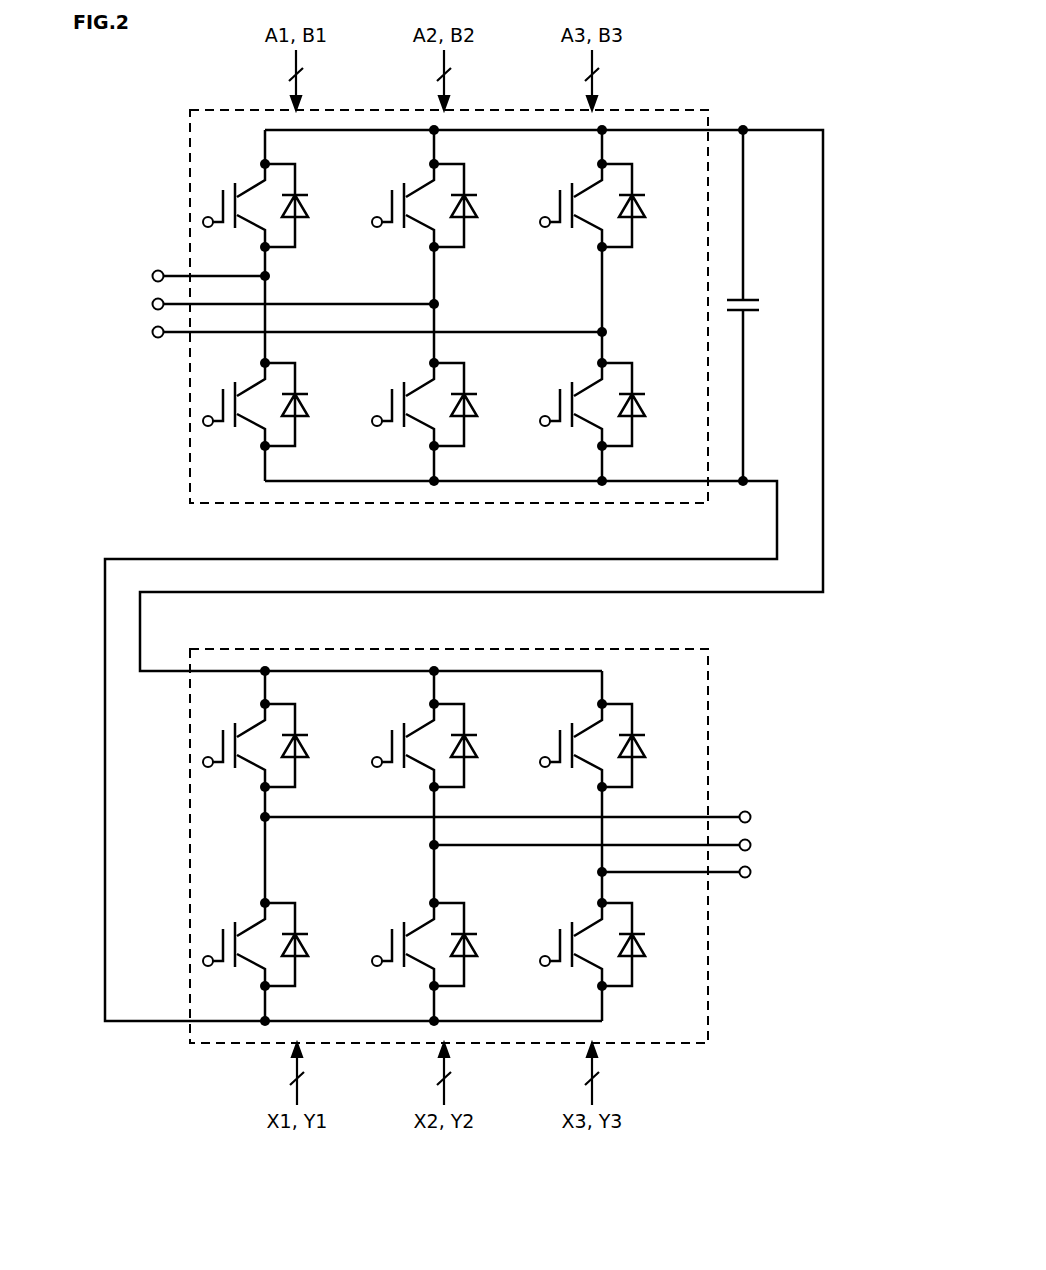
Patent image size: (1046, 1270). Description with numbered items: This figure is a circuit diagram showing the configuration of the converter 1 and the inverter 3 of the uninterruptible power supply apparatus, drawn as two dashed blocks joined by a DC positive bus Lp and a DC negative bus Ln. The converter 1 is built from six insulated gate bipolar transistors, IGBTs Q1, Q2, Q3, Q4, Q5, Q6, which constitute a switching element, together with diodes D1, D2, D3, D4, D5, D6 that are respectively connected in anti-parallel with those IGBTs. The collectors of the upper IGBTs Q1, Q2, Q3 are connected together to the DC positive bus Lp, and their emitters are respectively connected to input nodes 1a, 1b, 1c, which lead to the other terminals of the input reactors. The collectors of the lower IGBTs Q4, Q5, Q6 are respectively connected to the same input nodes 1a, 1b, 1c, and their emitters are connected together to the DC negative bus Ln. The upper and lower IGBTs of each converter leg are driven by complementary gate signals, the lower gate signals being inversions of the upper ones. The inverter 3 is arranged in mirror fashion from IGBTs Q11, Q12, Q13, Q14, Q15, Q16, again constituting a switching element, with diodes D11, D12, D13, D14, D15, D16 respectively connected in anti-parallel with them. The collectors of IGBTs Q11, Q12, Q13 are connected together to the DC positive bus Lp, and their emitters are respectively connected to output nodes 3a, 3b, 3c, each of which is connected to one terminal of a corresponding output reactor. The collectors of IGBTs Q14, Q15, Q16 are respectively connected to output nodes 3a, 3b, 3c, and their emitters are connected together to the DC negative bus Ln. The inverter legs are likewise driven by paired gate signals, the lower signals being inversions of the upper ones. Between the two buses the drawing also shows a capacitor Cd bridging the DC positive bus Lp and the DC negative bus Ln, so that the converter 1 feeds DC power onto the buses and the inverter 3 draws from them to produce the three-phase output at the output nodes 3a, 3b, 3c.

The converter 1 is at (190, 108).
The inverter 3 is at (190, 648).
The input node 1a is at (153, 271).
The input node 1b is at (153, 299).
The input node 1c is at (153, 337).
The output node 3a is at (750, 812).
The output node 3b is at (750, 840).
The output node 3c is at (750, 877).
The IGBT Q1 is at (223, 195).
The IGBT Q2 is at (392, 195).
The IGBT Q3 is at (560, 195).
The IGBT Q4 is at (223, 394).
The IGBT Q5 is at (392, 394).
The IGBT Q6 is at (560, 394).
The diode D1 is at (303, 197).
The diode D2 is at (472, 197).
The diode D3 is at (640, 197).
The diode D4 is at (303, 396).
The diode D5 is at (472, 396).
The diode D6 is at (640, 396).
The IGBT Q11 is at (223, 735).
The IGBT Q12 is at (392, 735).
The IGBT Q13 is at (560, 735).
The IGBT Q14 is at (223, 934).
The IGBT Q15 is at (392, 934).
The IGBT Q16 is at (560, 934).
The diode D11 is at (303, 737).
The diode D12 is at (472, 737).
The diode D13 is at (640, 737).
The diode D14 is at (303, 936).
The diode D15 is at (472, 936).
The diode D16 is at (640, 936).
The smoothing capacitor Cd is at (746, 300).
The DC positive bus Lp is at (795, 128).
The DC negative bus Ln is at (142, 1023).